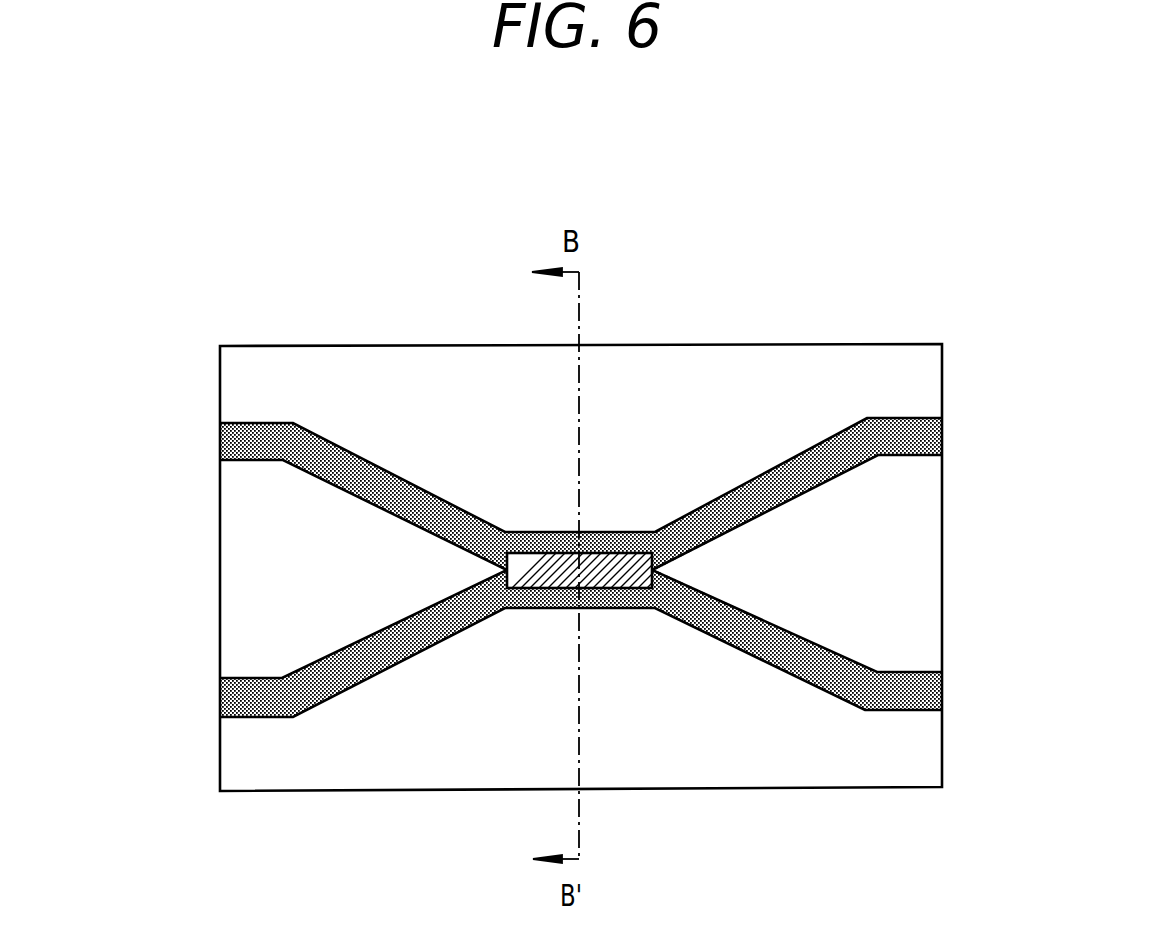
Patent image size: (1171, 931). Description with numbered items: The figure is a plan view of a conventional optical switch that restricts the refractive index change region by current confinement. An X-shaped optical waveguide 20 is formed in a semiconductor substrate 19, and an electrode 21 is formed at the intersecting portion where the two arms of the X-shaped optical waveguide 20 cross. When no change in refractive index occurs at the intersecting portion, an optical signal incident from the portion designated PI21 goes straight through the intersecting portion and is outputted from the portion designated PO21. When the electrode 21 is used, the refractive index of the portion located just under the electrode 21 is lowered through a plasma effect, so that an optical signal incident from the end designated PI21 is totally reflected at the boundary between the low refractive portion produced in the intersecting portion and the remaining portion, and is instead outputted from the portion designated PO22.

The semiconductor substrate 19 is at (403, 345).
The X-shaped optical waveguide 20 is at (820, 457).
The electrode 21 is at (561, 567).
The incident portion PI21 is at (220, 443).
The output portion PO22 is at (942, 432).
The output portion PO21 is at (942, 691).